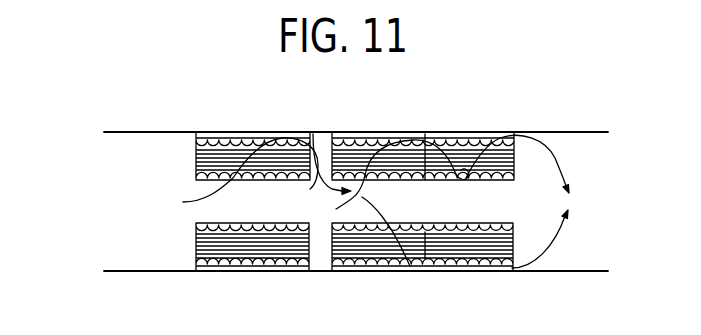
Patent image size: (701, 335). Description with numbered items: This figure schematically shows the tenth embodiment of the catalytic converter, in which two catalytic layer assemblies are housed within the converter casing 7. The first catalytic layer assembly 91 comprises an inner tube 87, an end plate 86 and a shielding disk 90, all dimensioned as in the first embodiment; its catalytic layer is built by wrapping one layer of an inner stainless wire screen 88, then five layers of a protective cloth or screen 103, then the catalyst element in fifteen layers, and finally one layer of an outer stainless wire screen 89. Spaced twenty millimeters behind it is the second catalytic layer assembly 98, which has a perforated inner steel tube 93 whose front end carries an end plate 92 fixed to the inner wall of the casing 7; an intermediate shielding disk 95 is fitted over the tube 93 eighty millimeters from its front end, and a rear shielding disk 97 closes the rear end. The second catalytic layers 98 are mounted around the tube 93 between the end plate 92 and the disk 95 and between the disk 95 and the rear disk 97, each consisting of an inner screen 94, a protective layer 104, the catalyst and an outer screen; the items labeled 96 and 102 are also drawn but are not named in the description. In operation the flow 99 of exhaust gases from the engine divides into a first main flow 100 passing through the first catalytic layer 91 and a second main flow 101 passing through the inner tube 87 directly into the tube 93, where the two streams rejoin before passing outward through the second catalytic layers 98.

The converter casing 7 is at (135, 132).
The end plate 86 is at (199, 133).
The inner tube 87 is at (200, 225).
The inner stainless wire screen 88 is at (267, 176).
The outer stainless wire screen 89 is at (280, 138).
The shielding disk 90 is at (315, 138).
The first catalytic layer assembly 91 is at (227, 152).
The end plate 92 is at (338, 135).
The perforated inner steel tube 93 is at (338, 206).
The inner screen 94 is at (343, 202).
The intermediate shielding disk 95 is at (425, 134).
The passage 96 is at (472, 137).
The rear shielding disk 97 is at (515, 197).
The second catalytic layer assembly 98 is at (368, 157).
The flow of exhaust gases 99 is at (98, 203).
The first main flow 100 is at (183, 202).
The second main flow 101 is at (315, 203).
The flow path 102 is at (512, 268).
The protective cloth or screen 103 is at (243, 226).
The protective layer 104 is at (410, 230).